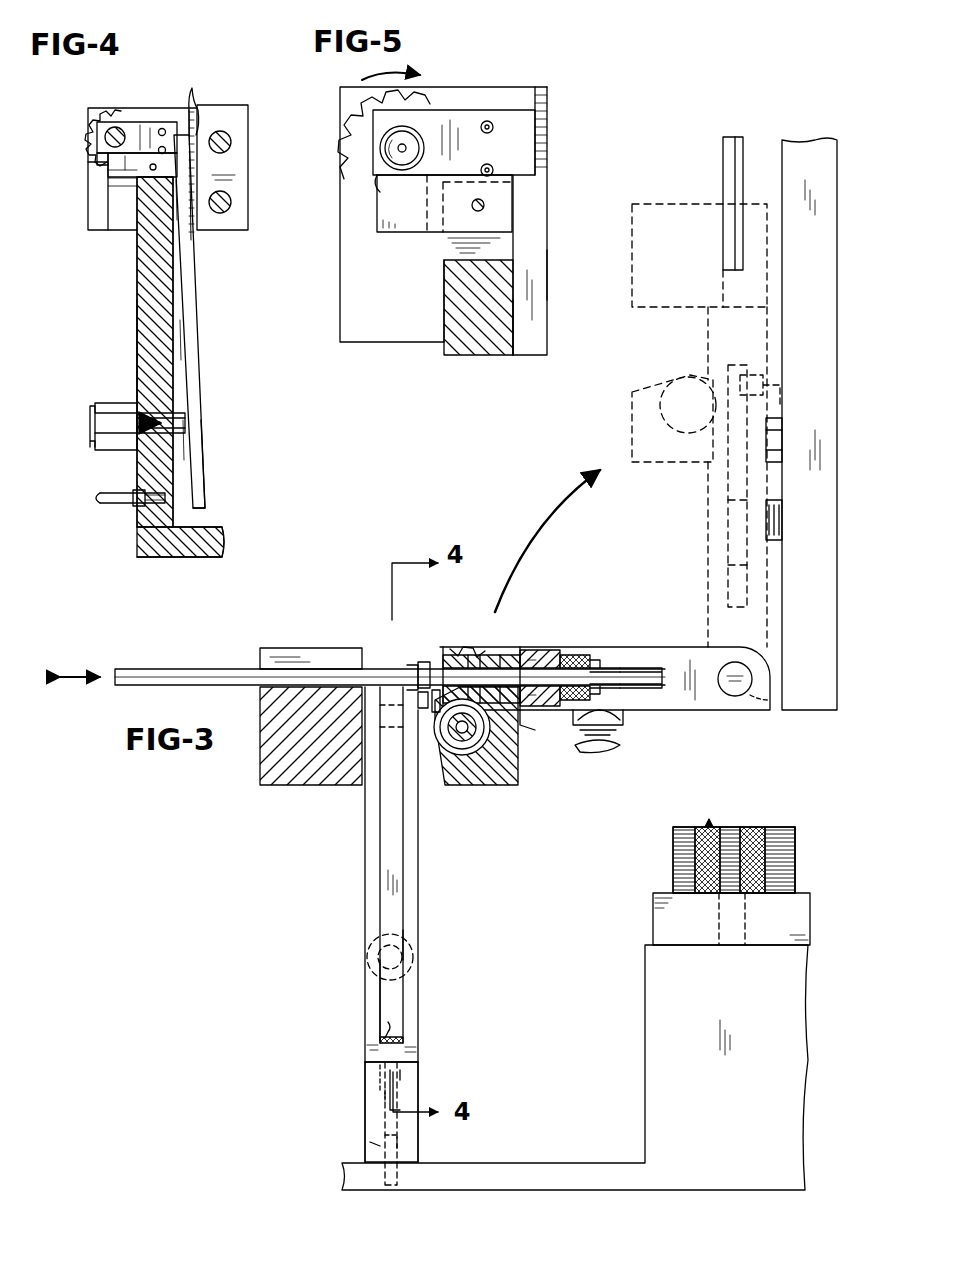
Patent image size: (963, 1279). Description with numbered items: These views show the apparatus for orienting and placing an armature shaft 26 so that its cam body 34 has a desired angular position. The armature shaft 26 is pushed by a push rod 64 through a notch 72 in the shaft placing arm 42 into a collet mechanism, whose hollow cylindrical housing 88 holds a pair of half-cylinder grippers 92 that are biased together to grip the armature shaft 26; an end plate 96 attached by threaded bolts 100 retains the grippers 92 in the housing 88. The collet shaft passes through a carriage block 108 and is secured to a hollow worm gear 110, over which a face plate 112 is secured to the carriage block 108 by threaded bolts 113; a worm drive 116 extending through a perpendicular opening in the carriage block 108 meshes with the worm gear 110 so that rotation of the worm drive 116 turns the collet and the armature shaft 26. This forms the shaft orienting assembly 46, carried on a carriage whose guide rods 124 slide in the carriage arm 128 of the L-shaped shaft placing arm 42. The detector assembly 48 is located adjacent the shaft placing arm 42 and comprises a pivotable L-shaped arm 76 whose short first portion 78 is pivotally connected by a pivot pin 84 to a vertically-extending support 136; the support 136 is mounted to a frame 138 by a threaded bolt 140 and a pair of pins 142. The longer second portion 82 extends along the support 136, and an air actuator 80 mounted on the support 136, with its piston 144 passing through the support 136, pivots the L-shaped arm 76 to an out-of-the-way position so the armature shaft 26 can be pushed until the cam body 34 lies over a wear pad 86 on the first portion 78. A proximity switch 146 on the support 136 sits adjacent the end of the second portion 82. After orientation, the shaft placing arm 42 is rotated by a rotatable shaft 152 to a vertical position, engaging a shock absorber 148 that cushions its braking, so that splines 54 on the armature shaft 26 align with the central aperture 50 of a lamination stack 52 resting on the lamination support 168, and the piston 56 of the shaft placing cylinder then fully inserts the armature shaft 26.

In FIG. 5, the armature shaft 26 is at (390, 140).
In FIG. 3, the armature shaft 26 is at (725, 536).
In FIG. 3, the cam body 34 is at (710, 375).
In FIG. 3, the shaft placing arm 42 is at (695, 650).
In FIG. 4, the shaft orienting assembly 46 is at (160, 100).
In FIG. 5, the shaft orienting assembly 46 is at (497, 78).
In FIG. 4, the detector assembly 48 is at (130, 352).
In FIG. 5, the detector assembly 48 is at (558, 262).
In FIG. 3, the central aperture 50 is at (735, 827).
In FIG. 3, the lamination stack 52 is at (795, 830).
In FIG. 3, the splines 54 is at (594, 668).
In FIG. 3, the piston 56 is at (723, 150).
In FIG. 4, the push rod 64 is at (105, 136).
In FIG. 3, the push rod 64 is at (160, 668).
In FIG. 3, the notch 72 is at (295, 668).
In FIG. 4, the L-shaped arm 76 is at (200, 338).
In FIG. 5, the L-shaped arm 76 is at (556, 230).
In FIG. 3, the L-shaped arm 76 is at (375, 888).
In FIG. 4, the first portion 78 is at (112, 175).
In FIG. 5, the first portion 78 is at (380, 212).
In FIG. 3, the first portion 78 is at (415, 690).
In FIG. 4, the air actuator 80 is at (95, 418).
In FIG. 3, the air actuator 80 is at (405, 925).
In FIG. 4, the second portion 82 is at (200, 462).
In FIG. 5, the second portion 82 is at (530, 328).
In FIG. 3, the second portion 82 is at (380, 998).
In FIG. 4, the pivot pin 84 is at (153, 172).
In FIG. 5, the pivot pin 84 is at (485, 205).
In FIG. 4, the wear pad 86 is at (100, 160).
In FIG. 5, the wear pad 86 is at (378, 182).
In FIG. 3, the housing 88 is at (530, 720).
In FIG. 3, the grippers 92 is at (530, 650).
In FIG. 3, the end plate 96 is at (585, 748).
In FIG. 3, the threaded bolts 100 is at (568, 655).
In FIG. 4, the carriage block 108 is at (90, 215).
In FIG. 5, the carriage block 108 is at (356, 290).
In FIG. 3, the carriage block 108 is at (632, 415).
In FIG. 4, the worm gear 110 is at (98, 112).
In FIG. 5, the worm gear 110 is at (375, 100).
In FIG. 3, the worm gear 110 is at (475, 650).
In FIG. 4, the face plate 112 is at (147, 122).
In FIG. 5, the face plate 112 is at (450, 110).
In FIG. 4, the threaded bolts 113 is at (192, 108).
In FIG. 5, the threaded bolts 113 is at (493, 168).
In FIG. 3, the worm drive 116 is at (470, 750).
In FIG. 4, the guide rods 124 is at (228, 195).
In FIG. 4, the carriage arm 128 is at (222, 112).
In FIG. 3, the carriage arm 128 is at (290, 790).
In FIG. 4, the support 136 is at (137, 322).
In FIG. 5, the support 136 is at (463, 340).
In FIG. 3, the support 136 is at (365, 1105).
In FIG. 3, the frame 138 is at (812, 140).
In FIG. 3, the threaded bolt 140 is at (365, 1082).
In FIG. 3, the pins 142 is at (365, 1137).
In FIG. 4, the piston 144 is at (175, 415).
In FIG. 3, the piston 144 is at (380, 955).
In FIG. 4, the proximity switch 146 is at (140, 505).
In FIG. 3, the proximity switch 146 is at (400, 1022).
In FIG. 3, the shock absorber 148 is at (782, 520).
In FIG. 3, the rotatable shaft 152 is at (737, 690).
In FIG. 3, the lamination support 168 is at (653, 913).